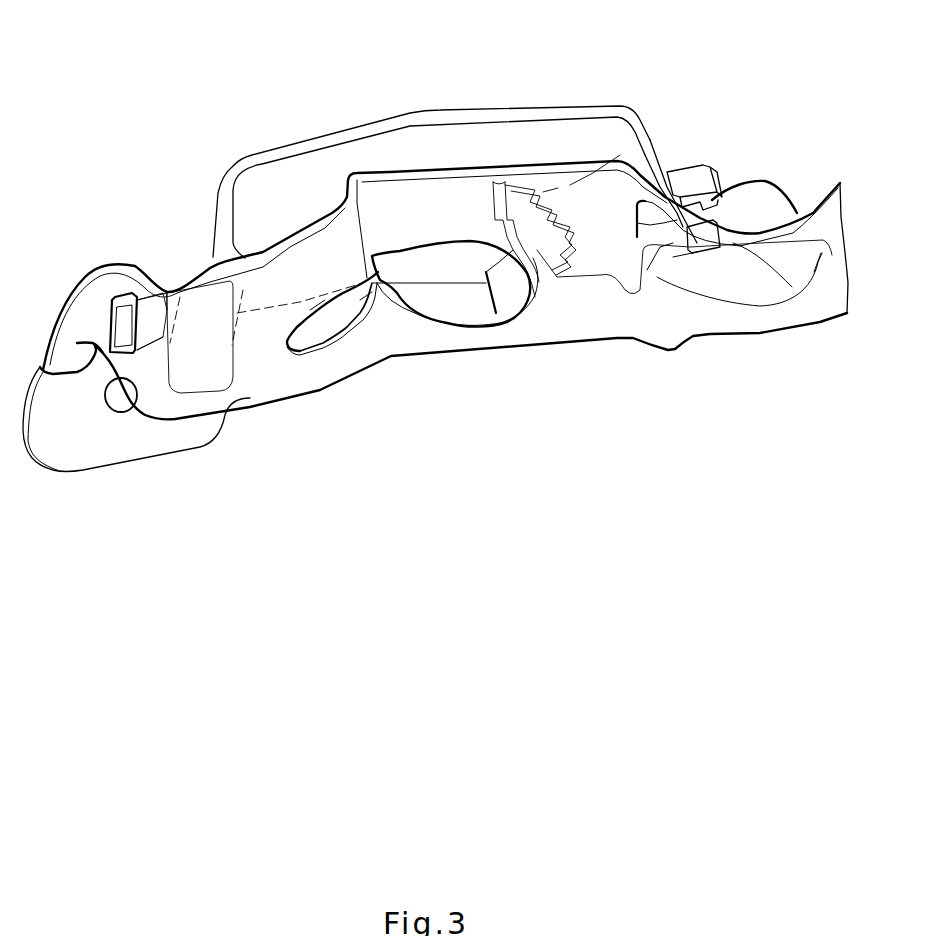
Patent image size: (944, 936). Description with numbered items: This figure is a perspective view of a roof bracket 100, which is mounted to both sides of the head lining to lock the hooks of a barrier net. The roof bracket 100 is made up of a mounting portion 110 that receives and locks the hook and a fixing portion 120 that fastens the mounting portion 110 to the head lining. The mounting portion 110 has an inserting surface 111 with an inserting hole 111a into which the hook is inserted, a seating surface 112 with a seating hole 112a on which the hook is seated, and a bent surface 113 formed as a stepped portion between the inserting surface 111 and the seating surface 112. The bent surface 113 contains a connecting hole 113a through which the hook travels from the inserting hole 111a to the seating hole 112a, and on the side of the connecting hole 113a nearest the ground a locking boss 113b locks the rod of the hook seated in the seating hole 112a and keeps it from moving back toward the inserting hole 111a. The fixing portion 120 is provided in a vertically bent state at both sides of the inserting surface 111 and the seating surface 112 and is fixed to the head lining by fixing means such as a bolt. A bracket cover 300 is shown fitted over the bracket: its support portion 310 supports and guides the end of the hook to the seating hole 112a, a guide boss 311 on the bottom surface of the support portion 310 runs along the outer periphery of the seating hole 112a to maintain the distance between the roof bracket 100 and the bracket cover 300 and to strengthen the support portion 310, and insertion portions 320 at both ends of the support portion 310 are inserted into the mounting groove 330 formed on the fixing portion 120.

The roof bracket 100 is at (372, 543).
The mounting portion 110 is at (260, 490).
The inserting surface 111 is at (265, 383).
The inserting hole 111a is at (327, 325).
The seating surface 112 is at (522, 333).
The seating hole 112a is at (486, 259).
The bent surface 113 is at (409, 300).
The connecting hole 113a is at (320, 305).
The locking boss 113b is at (370, 292).
The fixing portion 120 is at (720, 283).
The bracket cover 300 is at (375, 260).
The support portion 310 is at (408, 115).
The guide boss 311 is at (630, 117).
The insertion portion 320 is at (125, 290).
The mounting groove 330 is at (127, 335).